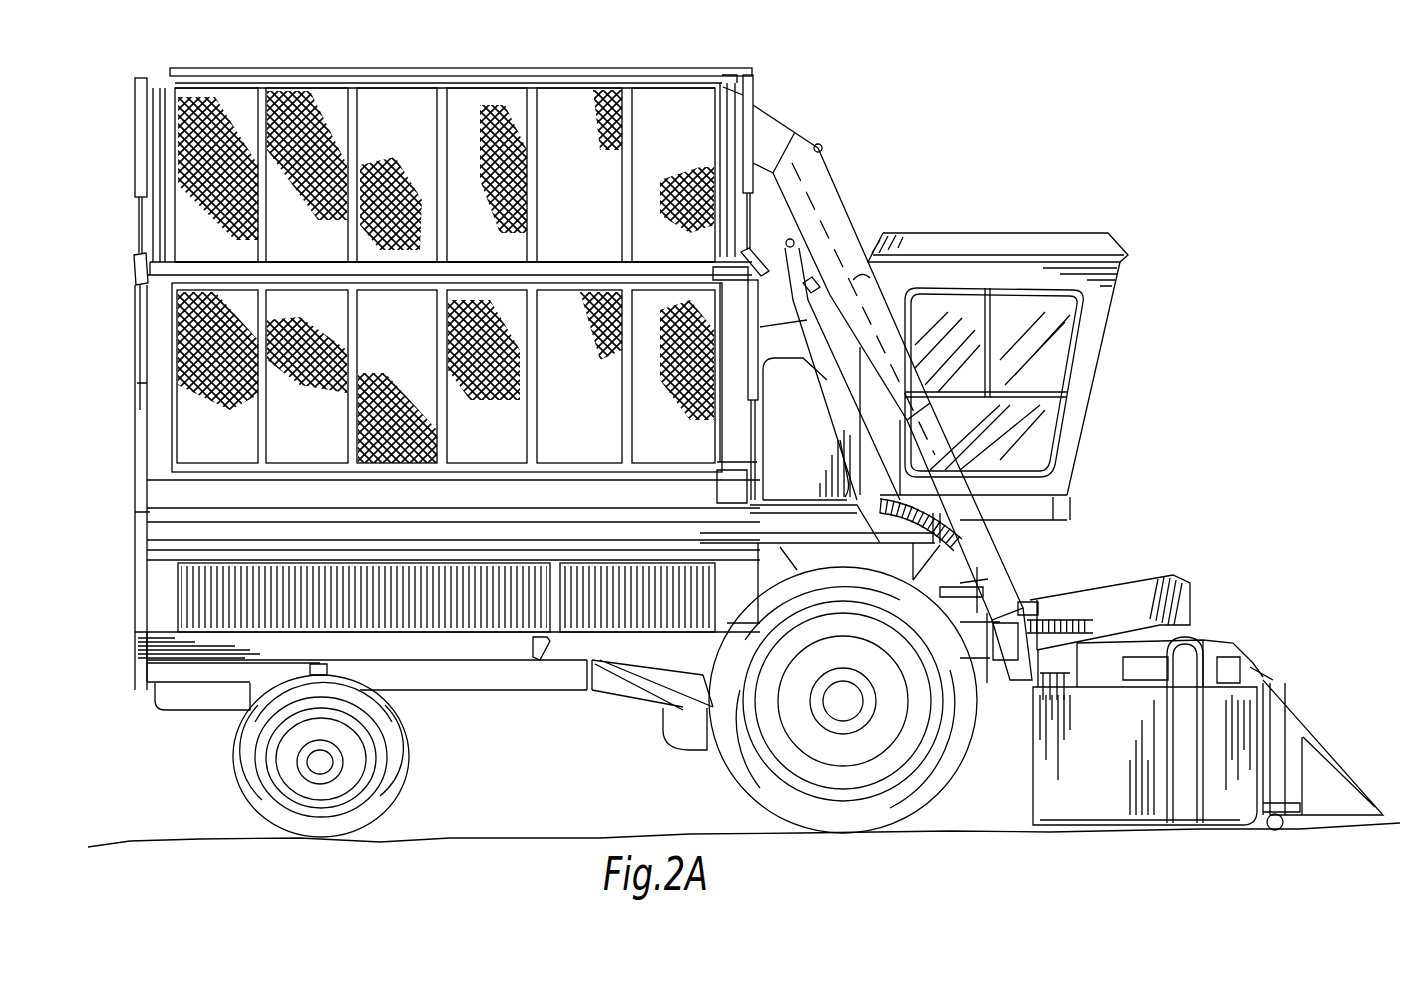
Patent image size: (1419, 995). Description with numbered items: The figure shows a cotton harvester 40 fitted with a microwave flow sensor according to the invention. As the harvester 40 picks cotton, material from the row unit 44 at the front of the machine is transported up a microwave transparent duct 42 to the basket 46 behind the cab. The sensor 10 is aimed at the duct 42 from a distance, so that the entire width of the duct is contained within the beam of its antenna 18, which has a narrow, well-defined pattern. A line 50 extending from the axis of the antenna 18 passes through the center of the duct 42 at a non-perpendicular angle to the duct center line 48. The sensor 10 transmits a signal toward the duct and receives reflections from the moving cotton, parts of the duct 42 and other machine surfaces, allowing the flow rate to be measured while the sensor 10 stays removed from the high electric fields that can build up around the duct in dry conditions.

The sensor 10 is at (775, 362).
The antenna 18 is at (855, 235).
The harvester 40 is at (1165, 108).
The duct 42 is at (826, 167).
The row unit 44 is at (1293, 713).
The basket 46 is at (680, 68).
The center line 48 is at (818, 197).
The line 50 is at (863, 288).